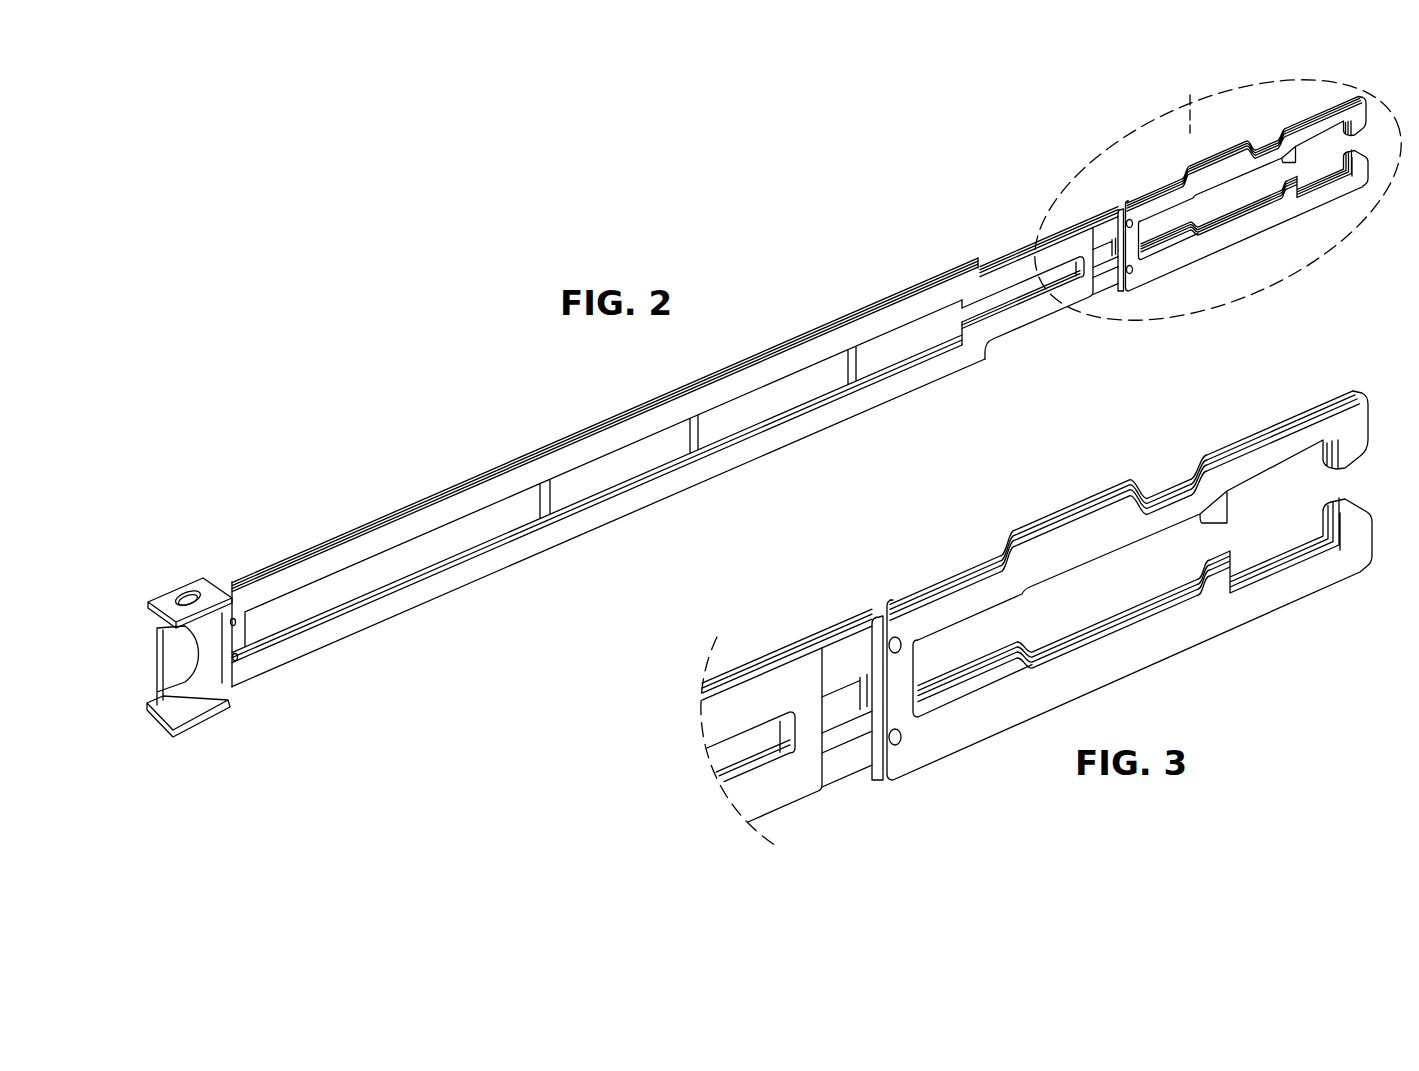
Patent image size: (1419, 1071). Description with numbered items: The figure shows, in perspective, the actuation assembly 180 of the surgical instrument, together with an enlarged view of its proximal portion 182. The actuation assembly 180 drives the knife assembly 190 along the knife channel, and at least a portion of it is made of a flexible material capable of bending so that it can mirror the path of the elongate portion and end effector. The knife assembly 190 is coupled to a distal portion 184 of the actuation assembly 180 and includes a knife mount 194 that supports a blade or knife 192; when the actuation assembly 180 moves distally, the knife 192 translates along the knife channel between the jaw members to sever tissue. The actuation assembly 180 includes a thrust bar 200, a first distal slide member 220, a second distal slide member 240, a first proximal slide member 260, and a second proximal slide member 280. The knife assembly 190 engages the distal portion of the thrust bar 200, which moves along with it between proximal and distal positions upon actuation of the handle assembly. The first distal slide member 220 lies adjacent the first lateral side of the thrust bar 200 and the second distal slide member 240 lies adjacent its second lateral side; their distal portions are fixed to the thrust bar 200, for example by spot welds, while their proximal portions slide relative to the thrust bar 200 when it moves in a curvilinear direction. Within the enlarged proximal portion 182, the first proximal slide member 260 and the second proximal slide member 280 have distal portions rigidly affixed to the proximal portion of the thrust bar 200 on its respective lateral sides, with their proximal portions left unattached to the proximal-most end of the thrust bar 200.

In FIG. 2, the actuation assembly 180 is at (840, 292).
In FIG. 2, the distal end portion 182 is at (1310, 78).
In FIG. 2, the distal portion 184 is at (272, 536).
In FIG. 2, the knife assembly 190 is at (203, 554).
In FIG. 2, the knife 192 is at (180, 652).
In FIG. 2, the knife mount 194 is at (207, 688).
In FIG. 2, the thrust bar 200 is at (1100, 205).
In FIG. 3, the thrust bar 200 is at (838, 643).
In FIG. 2, the first distal slide member 220 is at (370, 520).
In FIG. 3, the first distal slide member 220 is at (757, 658).
In FIG. 2, the second distal slide member 240 is at (555, 548).
In FIG. 3, the second distal slide member 240 is at (792, 793).
In FIG. 2, the first proximal slide member 260 is at (1278, 125).
In FIG. 3, the first proximal slide member 260 is at (1030, 523).
In FIG. 2, the second proximal slide member 280 is at (1230, 240).
In FIG. 3, the second proximal slide member 280 is at (1155, 652).